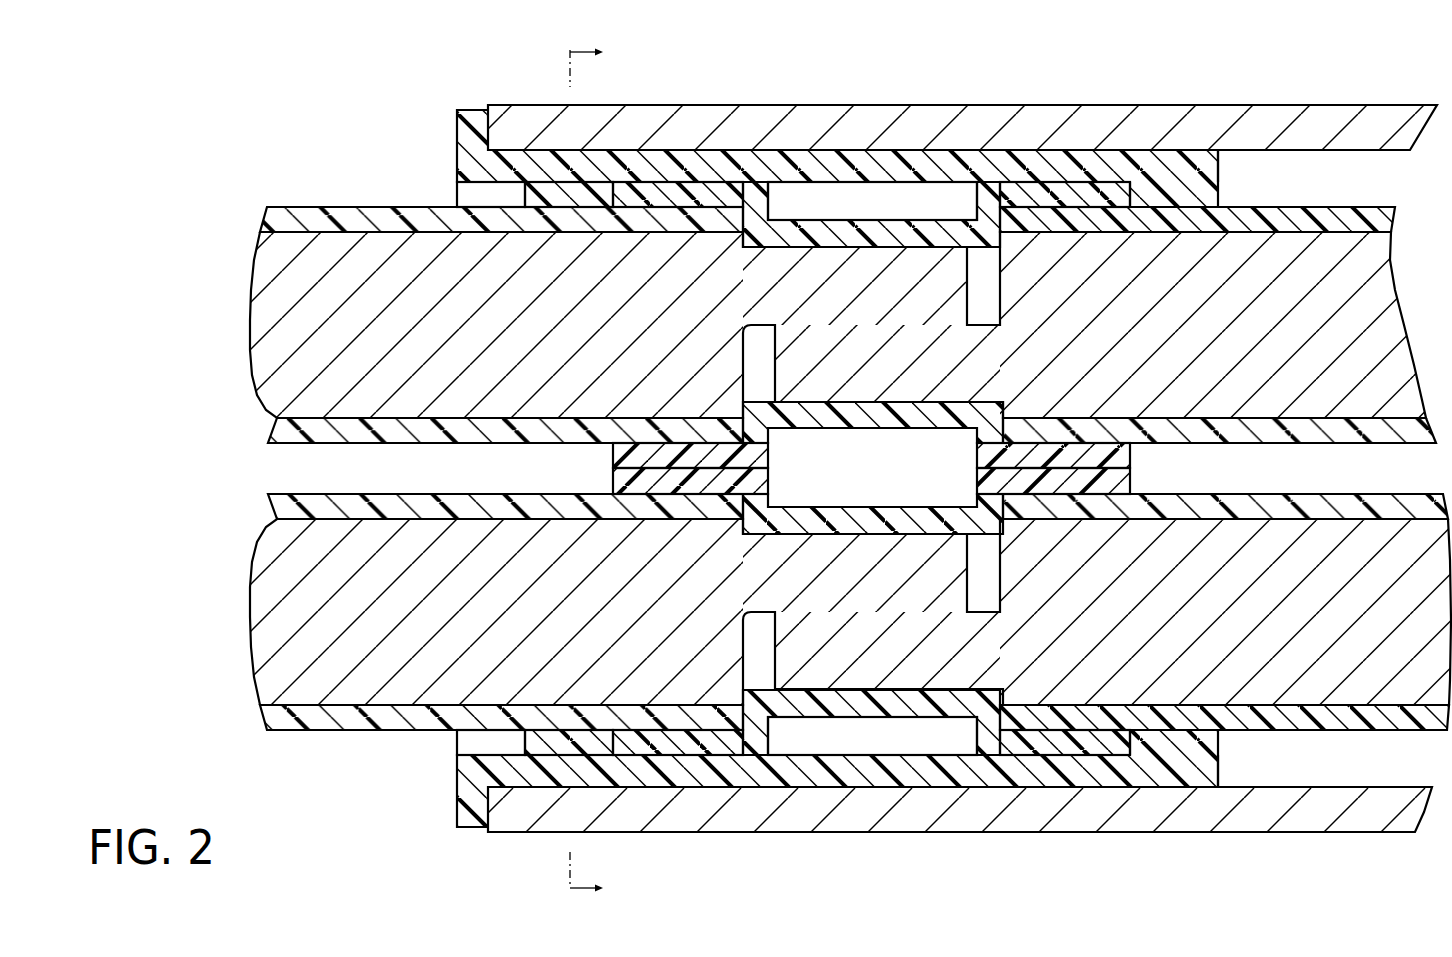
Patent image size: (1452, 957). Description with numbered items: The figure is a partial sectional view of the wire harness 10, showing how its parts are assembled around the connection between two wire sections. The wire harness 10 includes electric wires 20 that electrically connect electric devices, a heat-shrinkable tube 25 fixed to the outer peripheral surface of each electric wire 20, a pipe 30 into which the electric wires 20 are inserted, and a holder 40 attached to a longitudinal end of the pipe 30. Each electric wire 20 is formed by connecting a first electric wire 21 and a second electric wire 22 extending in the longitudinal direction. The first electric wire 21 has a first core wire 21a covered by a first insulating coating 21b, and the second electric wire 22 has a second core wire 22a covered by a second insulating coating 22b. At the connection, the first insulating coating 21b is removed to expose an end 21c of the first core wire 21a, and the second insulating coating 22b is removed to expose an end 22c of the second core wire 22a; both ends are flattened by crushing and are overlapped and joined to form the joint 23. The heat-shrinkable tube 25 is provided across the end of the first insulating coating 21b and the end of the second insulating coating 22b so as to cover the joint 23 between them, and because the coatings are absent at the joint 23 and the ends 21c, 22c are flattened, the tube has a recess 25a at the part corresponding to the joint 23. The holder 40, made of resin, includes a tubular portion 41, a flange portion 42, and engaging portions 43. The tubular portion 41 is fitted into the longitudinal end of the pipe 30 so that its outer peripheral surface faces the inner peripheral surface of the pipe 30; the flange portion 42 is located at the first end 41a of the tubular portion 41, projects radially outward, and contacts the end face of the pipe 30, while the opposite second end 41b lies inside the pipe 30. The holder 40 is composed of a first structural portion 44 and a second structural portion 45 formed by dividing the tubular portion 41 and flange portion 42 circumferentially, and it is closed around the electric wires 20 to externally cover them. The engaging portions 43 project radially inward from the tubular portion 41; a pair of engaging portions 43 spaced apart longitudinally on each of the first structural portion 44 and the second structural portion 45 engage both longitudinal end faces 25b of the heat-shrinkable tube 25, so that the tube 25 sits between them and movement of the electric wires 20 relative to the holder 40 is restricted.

The wire harness 10 is at (393, 87).
The electric wire 20 is at (277, 206).
The first electric wire 21 is at (371, 207).
The first core wire 21a is at (322, 250).
The first insulating coating 21b is at (417, 207).
The end of the first core wire 21c is at (836, 257).
The second electric wire 22 is at (1332, 207).
The second core wire 22a is at (1283, 250).
The second insulating coating 22b is at (1382, 207).
The end of the second core wire 22c is at (908, 393).
The joint 23 is at (924, 227).
The heat-shrinkable tube 25 is at (867, 469).
The recess 25a is at (893, 223).
The longitudinal end faces of the heat-shrinkable tube 25b is at (601, 192).
The pipe 30 is at (1322, 103).
The holder 40 is at (683, 135).
The tubular portion 41 is at (720, 170).
The first end of the tubular portion 41a is at (457, 163).
The second end of the tubular portion 41b is at (1222, 167).
The flange portion 42 is at (473, 110).
The engaging portion 43 is at (577, 187).
The first structural portion 44 is at (1078, 165).
The second structural portion 45 is at (1088, 778).